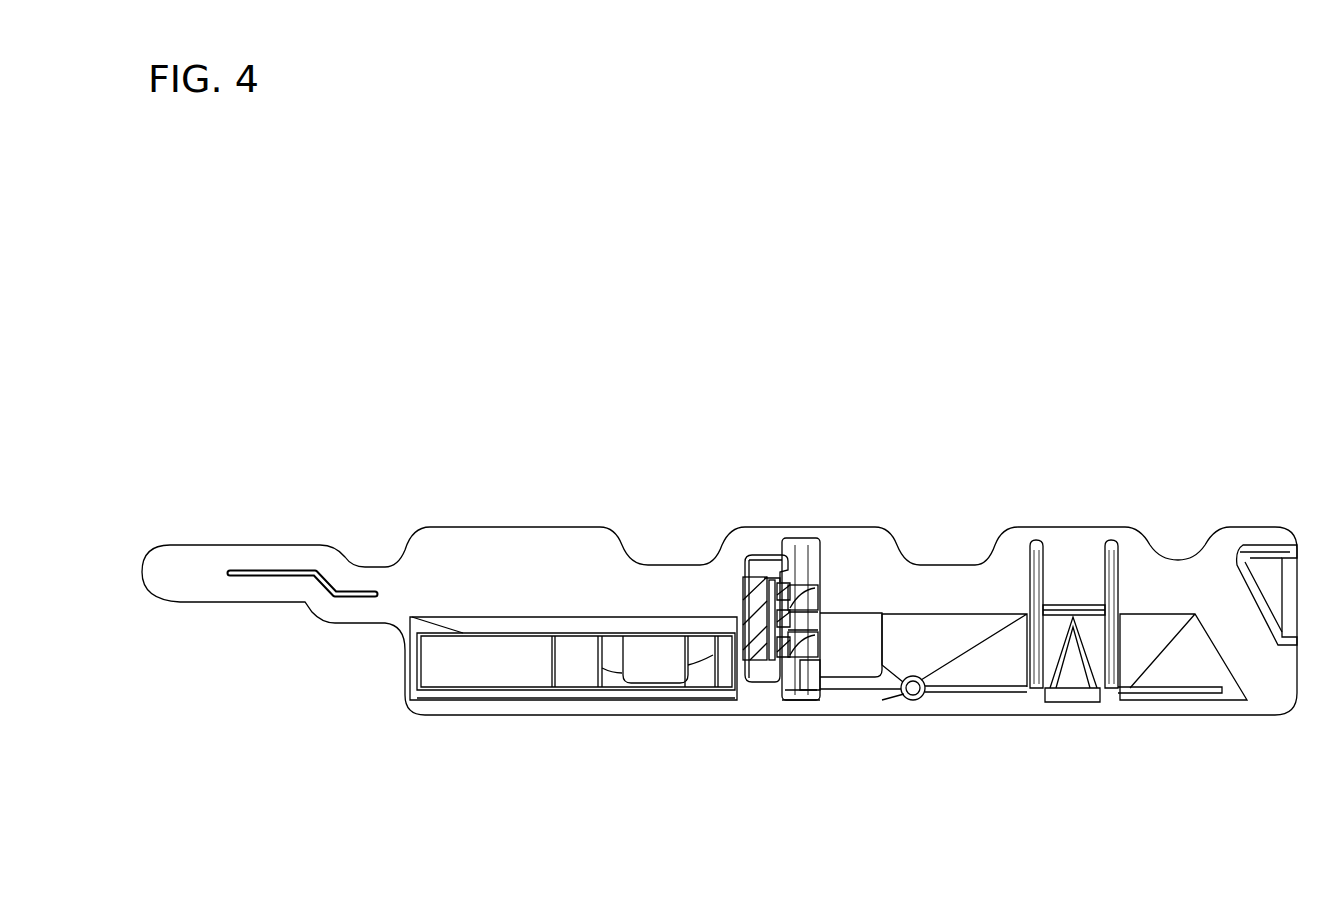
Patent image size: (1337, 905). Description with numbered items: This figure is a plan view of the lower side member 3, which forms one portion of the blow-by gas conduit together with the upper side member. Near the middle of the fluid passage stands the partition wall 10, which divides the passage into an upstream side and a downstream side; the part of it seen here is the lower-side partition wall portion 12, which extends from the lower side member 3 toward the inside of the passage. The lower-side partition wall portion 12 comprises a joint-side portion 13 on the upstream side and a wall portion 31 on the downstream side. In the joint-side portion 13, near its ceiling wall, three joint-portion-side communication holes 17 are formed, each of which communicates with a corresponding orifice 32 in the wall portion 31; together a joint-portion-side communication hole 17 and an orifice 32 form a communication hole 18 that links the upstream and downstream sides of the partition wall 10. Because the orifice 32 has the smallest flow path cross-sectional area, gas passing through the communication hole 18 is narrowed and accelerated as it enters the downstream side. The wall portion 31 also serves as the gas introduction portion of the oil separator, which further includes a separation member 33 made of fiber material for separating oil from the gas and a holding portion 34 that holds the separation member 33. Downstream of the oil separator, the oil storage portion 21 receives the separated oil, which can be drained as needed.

The lower side member 3 is at (934, 738).
The partition wall 10 is at (740, 600).
The lower-side partition wall portion 12 is at (795, 540).
The joint-side portion 13 is at (795, 700).
The joint-portion-side communication hole 17 is at (845, 610).
The communication hole 18 is at (808, 692).
The oil storage portion 21 is at (508, 672).
The wall portion 31 is at (750, 693).
The orifice 32 is at (805, 590).
The separation member 33 is at (752, 590).
The holding portion 34 is at (745, 600).